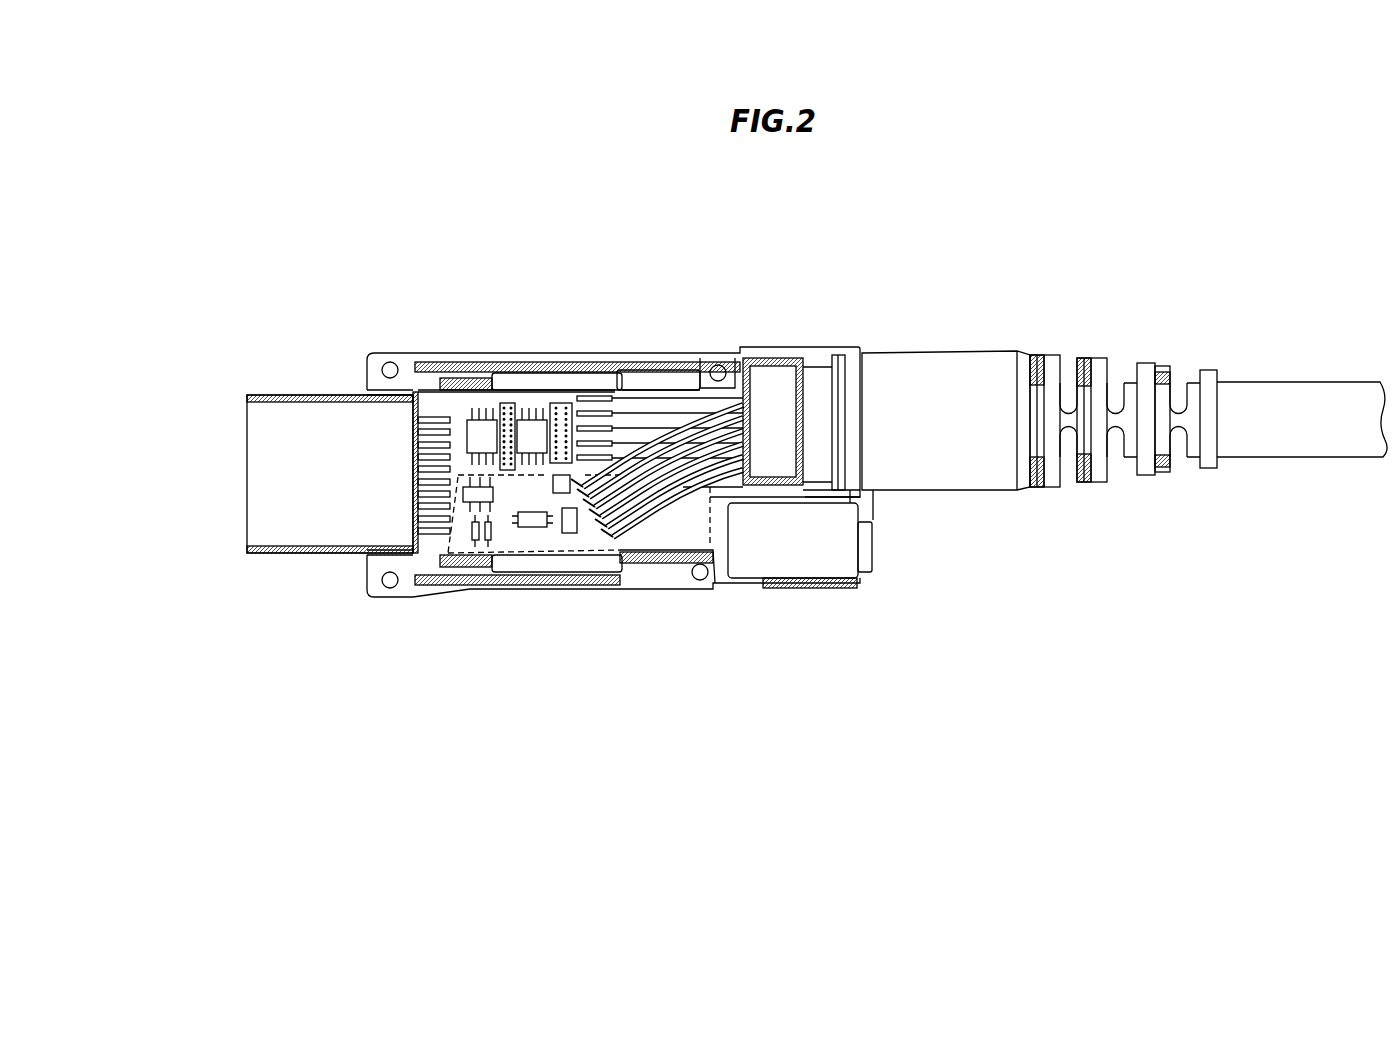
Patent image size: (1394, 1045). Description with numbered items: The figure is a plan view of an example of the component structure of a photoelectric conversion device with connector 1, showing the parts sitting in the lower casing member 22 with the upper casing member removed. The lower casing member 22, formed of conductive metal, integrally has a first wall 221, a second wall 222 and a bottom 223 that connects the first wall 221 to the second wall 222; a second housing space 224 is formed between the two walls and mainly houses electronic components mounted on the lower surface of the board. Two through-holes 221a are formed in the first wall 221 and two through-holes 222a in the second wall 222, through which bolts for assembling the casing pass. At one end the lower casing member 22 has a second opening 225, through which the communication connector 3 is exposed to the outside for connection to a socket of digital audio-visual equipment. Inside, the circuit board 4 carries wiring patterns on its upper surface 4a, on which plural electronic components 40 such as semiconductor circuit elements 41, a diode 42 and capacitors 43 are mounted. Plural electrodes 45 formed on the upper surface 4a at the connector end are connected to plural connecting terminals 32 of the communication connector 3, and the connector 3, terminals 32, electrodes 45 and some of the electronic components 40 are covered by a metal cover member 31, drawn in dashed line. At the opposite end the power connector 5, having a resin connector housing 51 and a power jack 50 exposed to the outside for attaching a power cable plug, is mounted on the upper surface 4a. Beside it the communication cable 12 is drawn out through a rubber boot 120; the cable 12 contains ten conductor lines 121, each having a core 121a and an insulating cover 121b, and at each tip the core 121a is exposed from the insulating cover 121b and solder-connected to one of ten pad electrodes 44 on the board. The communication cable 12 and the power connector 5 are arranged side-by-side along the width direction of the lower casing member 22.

The connector device 1 is at (262, 190).
The communication connector 3 is at (370, 448).
The circuit board 4 is at (665, 531).
The upper surface 4a is at (677, 528).
The power connector 5 is at (956, 572).
The communication cable 12 is at (1285, 390).
The lower casing member 22 is at (540, 440).
The cover member 31 is at (345, 392).
The connecting terminals 32 is at (412, 418).
The electronic components 40 is at (420, 440).
The semiconductor circuit elements 41 is at (428, 622).
The diode 42 is at (532, 522).
The capacitors 43 is at (488, 540).
The pad electrodes 44 is at (608, 545).
The electrodes 45 is at (443, 417).
The power jack 50 is at (807, 560).
The connector housing 51 is at (850, 580).
The rubber boot 120 is at (1115, 367).
The conductor lines 121 is at (877, 574).
The core 121a is at (633, 530).
The insulating cover 121b is at (653, 528).
The first wall 221 is at (367, 575).
The through-holes 221a is at (383, 590).
The second wall 222 is at (373, 365).
The through-holes 222a is at (388, 362).
The bottom 223 is at (688, 377).
The second housing space 224 is at (650, 373).
The second opening 225 is at (363, 560).